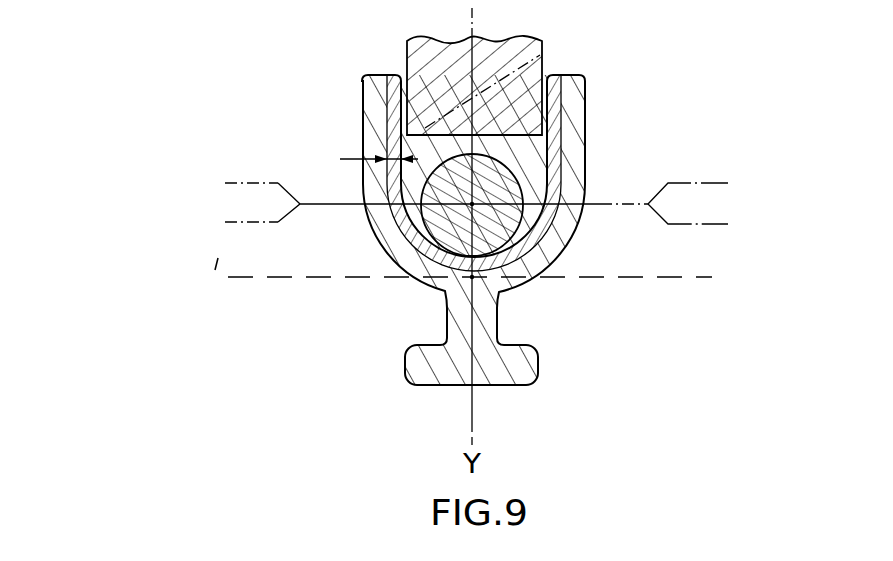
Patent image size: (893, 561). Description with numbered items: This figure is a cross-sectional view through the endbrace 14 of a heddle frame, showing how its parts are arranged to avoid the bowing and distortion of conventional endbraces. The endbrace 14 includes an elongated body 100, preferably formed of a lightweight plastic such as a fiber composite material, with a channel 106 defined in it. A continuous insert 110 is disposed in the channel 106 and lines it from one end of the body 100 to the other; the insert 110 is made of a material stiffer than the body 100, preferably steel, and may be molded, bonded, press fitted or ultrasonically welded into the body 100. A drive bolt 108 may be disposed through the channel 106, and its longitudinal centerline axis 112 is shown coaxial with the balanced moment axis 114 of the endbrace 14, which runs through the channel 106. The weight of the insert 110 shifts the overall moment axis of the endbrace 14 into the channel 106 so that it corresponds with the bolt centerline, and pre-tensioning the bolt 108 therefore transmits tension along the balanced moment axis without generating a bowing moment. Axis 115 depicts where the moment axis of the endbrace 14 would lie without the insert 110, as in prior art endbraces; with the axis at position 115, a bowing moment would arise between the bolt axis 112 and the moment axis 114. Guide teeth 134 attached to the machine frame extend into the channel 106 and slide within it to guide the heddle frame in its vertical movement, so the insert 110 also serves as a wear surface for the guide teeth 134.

The endbrace 14 is at (535, 216).
The elongated body 100 is at (568, 145).
The channel 106 is at (532, 184).
The drive bolt 108 is at (537, 245).
The continuous insert 110 is at (558, 103).
The longitudinal centerline axis 112 is at (776, 224).
The balanced moment axis 114 is at (776, 185).
The moment axis without insert 115 is at (763, 262).
The guide teeth 134 is at (521, 50).